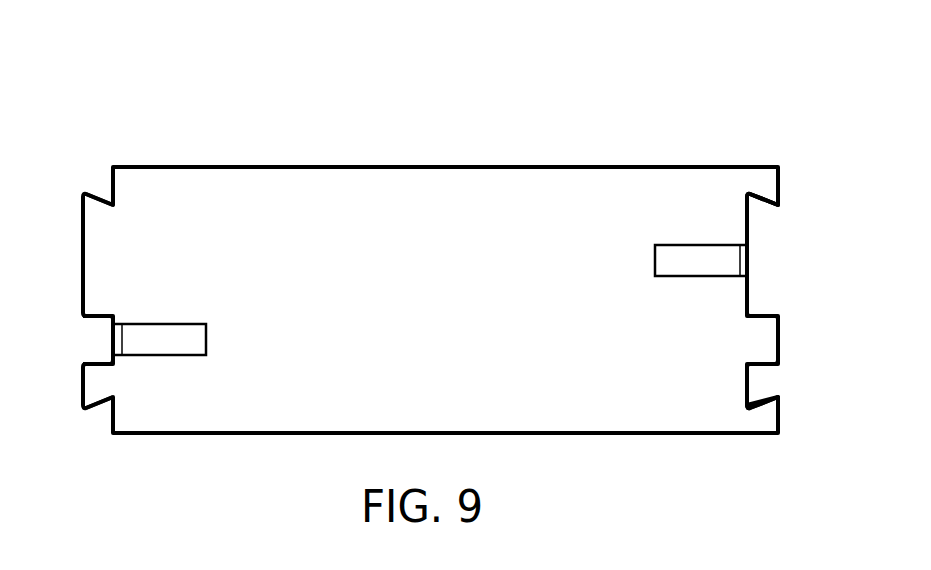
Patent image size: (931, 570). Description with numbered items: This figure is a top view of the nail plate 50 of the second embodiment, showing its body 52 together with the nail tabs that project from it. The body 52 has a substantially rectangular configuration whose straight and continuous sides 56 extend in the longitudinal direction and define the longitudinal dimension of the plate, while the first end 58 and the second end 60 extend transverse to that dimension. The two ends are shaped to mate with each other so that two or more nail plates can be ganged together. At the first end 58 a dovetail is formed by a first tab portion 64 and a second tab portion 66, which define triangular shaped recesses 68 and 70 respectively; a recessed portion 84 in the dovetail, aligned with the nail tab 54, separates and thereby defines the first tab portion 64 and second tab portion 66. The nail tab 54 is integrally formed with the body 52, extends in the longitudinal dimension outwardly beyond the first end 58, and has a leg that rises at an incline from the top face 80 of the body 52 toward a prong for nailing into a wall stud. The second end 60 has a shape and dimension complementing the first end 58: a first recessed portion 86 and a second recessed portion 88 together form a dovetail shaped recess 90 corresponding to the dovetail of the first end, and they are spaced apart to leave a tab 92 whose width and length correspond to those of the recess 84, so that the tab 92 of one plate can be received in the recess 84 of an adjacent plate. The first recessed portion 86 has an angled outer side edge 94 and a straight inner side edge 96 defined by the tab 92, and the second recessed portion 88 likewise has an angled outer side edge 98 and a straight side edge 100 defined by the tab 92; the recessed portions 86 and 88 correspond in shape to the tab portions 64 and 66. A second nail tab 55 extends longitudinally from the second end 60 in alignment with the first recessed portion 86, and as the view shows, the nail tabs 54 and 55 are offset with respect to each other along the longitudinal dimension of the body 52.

The nail plate 50 is at (478, 147).
The body 52 is at (392, 203).
The nail tab 54 is at (157, 330).
The second nail tab 55 is at (677, 263).
The sides 56 is at (248, 167).
The first end 58 is at (83, 215).
The second end 60 is at (779, 345).
The first tab portion 64 is at (98, 245).
The second tab portion 66 is at (92, 382).
The triangular shaped recess 68 is at (110, 204).
The triangular shaped recess 70 is at (100, 405).
The top face 80 is at (530, 195).
The recessed portion 84 is at (107, 338).
The first recessed portion 86 is at (762, 218).
The second recessed portion 88 is at (768, 380).
The dovetail shaped recess 90 is at (760, 262).
The tab 92 is at (766, 342).
The angled outer side edge 94 is at (745, 205).
The straight inner side edge 96 is at (760, 308).
The angled outer side edge 98 is at (745, 395).
The straight side edge 100 is at (760, 370).